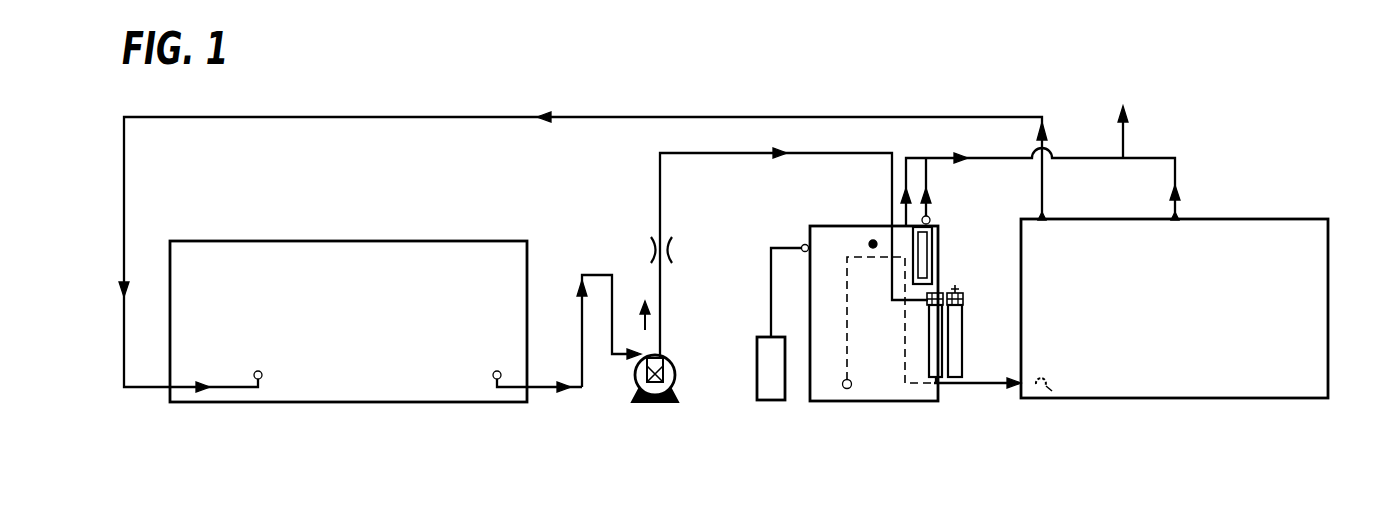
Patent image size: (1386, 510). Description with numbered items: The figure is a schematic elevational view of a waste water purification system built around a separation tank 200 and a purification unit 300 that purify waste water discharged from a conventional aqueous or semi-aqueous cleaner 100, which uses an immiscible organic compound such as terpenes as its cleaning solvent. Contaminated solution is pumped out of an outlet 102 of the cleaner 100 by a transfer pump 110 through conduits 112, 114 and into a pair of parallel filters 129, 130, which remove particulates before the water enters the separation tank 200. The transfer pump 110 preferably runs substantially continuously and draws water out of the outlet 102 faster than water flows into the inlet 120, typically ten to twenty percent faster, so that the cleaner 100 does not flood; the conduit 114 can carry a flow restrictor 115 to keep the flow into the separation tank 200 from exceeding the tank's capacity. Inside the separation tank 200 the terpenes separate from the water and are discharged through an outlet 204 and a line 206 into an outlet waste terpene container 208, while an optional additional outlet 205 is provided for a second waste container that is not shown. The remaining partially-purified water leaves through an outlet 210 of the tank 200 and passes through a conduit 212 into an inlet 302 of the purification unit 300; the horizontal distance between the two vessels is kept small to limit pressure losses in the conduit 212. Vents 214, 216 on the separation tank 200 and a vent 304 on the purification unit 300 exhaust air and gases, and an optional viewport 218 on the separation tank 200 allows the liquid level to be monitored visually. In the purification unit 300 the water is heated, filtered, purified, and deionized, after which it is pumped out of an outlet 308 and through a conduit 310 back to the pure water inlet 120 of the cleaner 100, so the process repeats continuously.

The cleaner 100 is at (347, 404).
The outlet 102 is at (495, 378).
The transfer pump 110 is at (654, 402).
The conduit 112 is at (583, 373).
The conduit 114 is at (661, 204).
The flow restrictor 115 is at (672, 249).
The inlet 120 is at (260, 378).
The filter 129 is at (943, 304).
The filter 130 is at (943, 342).
The separation tank 200 is at (858, 403).
The outlet 204 is at (801, 245).
The additional outlet 205 is at (873, 241).
The line 206 is at (771, 310).
The outlet waste terpene container 208 is at (777, 402).
The outlet 210 is at (938, 388).
The conduit 212 is at (982, 387).
The vent 214 is at (930, 220).
The vent 216 is at (844, 388).
The viewport 218 is at (932, 262).
The purification unit 300 is at (1222, 400).
The inlet 302 is at (1054, 393).
The vent 304 is at (1177, 215).
The outlet 308 is at (1043, 215).
The conduit 310 is at (895, 117).